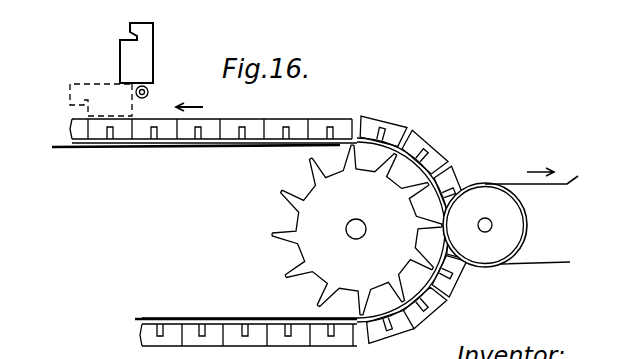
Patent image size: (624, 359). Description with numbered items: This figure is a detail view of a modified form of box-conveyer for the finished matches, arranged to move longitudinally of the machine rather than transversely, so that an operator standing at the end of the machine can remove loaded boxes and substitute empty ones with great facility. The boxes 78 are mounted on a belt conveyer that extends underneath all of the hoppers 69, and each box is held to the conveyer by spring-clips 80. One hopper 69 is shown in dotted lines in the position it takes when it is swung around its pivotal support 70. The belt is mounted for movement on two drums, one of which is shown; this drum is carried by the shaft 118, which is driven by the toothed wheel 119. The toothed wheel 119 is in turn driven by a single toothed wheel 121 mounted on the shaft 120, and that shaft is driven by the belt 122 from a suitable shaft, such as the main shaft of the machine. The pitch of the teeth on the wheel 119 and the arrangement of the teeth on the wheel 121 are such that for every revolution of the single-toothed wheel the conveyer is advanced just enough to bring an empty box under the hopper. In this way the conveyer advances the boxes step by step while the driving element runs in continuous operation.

The hopper 69 is at (145, 50).
The pivotal support 70 is at (149, 91).
The box 78 is at (248, 122).
The spring-clip 80 is at (288, 133).
The shaft 118 is at (356, 219).
The toothed wheel 119 is at (296, 230).
The shaft 120 is at (489, 221).
The single toothed wheel 121 is at (505, 225).
The belt 122 is at (539, 210).